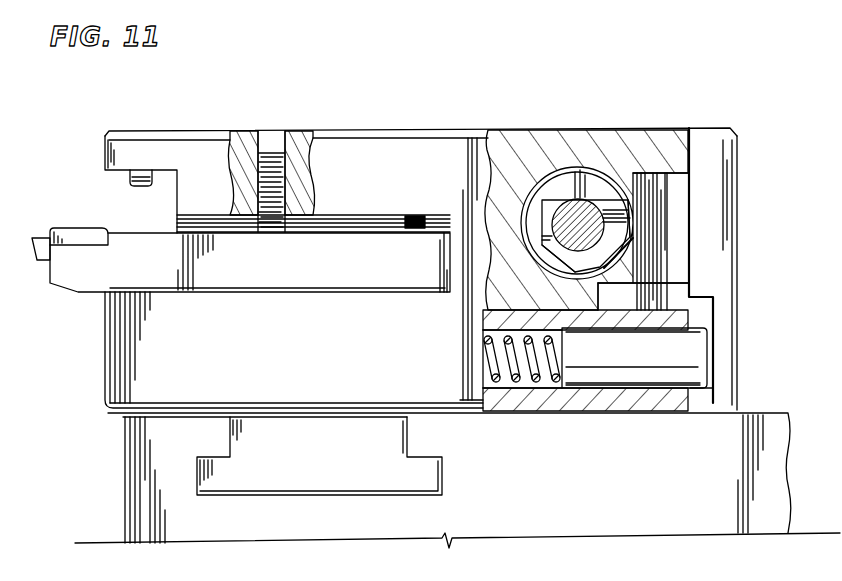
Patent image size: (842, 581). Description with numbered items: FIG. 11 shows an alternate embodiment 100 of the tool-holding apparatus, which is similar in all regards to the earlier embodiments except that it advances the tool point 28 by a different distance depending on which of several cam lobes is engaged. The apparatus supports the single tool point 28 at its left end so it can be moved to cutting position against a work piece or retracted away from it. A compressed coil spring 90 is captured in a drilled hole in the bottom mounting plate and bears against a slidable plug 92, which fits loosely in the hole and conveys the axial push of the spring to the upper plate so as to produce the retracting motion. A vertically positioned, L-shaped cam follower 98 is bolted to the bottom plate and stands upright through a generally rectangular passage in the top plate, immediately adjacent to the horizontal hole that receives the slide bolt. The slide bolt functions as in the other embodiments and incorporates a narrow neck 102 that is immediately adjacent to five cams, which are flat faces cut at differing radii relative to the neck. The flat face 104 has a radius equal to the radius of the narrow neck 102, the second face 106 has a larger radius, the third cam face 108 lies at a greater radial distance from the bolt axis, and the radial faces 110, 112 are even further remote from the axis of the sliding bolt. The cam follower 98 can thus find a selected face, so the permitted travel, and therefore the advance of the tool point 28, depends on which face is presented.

The tool point 28 is at (68, 232).
The compressed coil spring 90 is at (537, 384).
The slidable plug 92 is at (653, 373).
The cam follower 98 is at (647, 203).
The alternate embodiment 100 is at (391, 95).
The narrow neck 102 is at (563, 203).
The flat face 104 is at (595, 202).
The second face 106 is at (540, 217).
The third cam face 108 is at (547, 257).
The radial face 110 is at (605, 275).
The radial face 112 is at (633, 245).